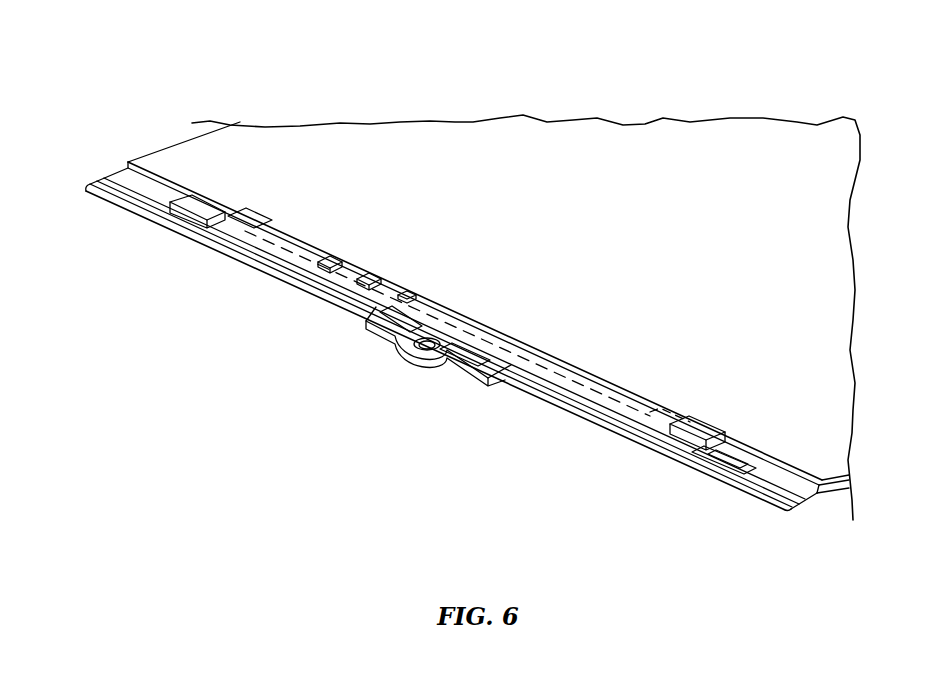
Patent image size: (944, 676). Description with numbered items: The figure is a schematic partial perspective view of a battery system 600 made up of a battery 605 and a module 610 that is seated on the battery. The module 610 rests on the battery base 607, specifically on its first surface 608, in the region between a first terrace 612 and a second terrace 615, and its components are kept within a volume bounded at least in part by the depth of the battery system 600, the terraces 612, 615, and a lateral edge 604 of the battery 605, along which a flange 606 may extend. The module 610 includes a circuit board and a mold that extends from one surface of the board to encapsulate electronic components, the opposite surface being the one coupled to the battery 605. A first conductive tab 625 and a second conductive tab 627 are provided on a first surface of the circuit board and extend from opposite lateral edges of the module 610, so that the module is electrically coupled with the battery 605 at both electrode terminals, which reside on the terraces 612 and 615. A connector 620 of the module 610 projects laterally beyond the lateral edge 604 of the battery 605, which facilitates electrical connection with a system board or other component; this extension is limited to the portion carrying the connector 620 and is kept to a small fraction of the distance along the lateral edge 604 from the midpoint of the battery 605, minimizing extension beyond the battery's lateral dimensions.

The battery system 600 is at (117, 88).
The lateral edge 604 is at (687, 460).
The battery 605 is at (397, 137).
The flange 606 is at (745, 493).
The battery base 607 is at (556, 137).
The first surface 608 is at (663, 143).
The module 610 is at (282, 278).
The first terrace 612 is at (127, 175).
The second terrace 615 is at (818, 494).
The connector 620 is at (442, 350).
The first conductive tab 625 is at (173, 207).
The second conductive tab 627 is at (672, 446).